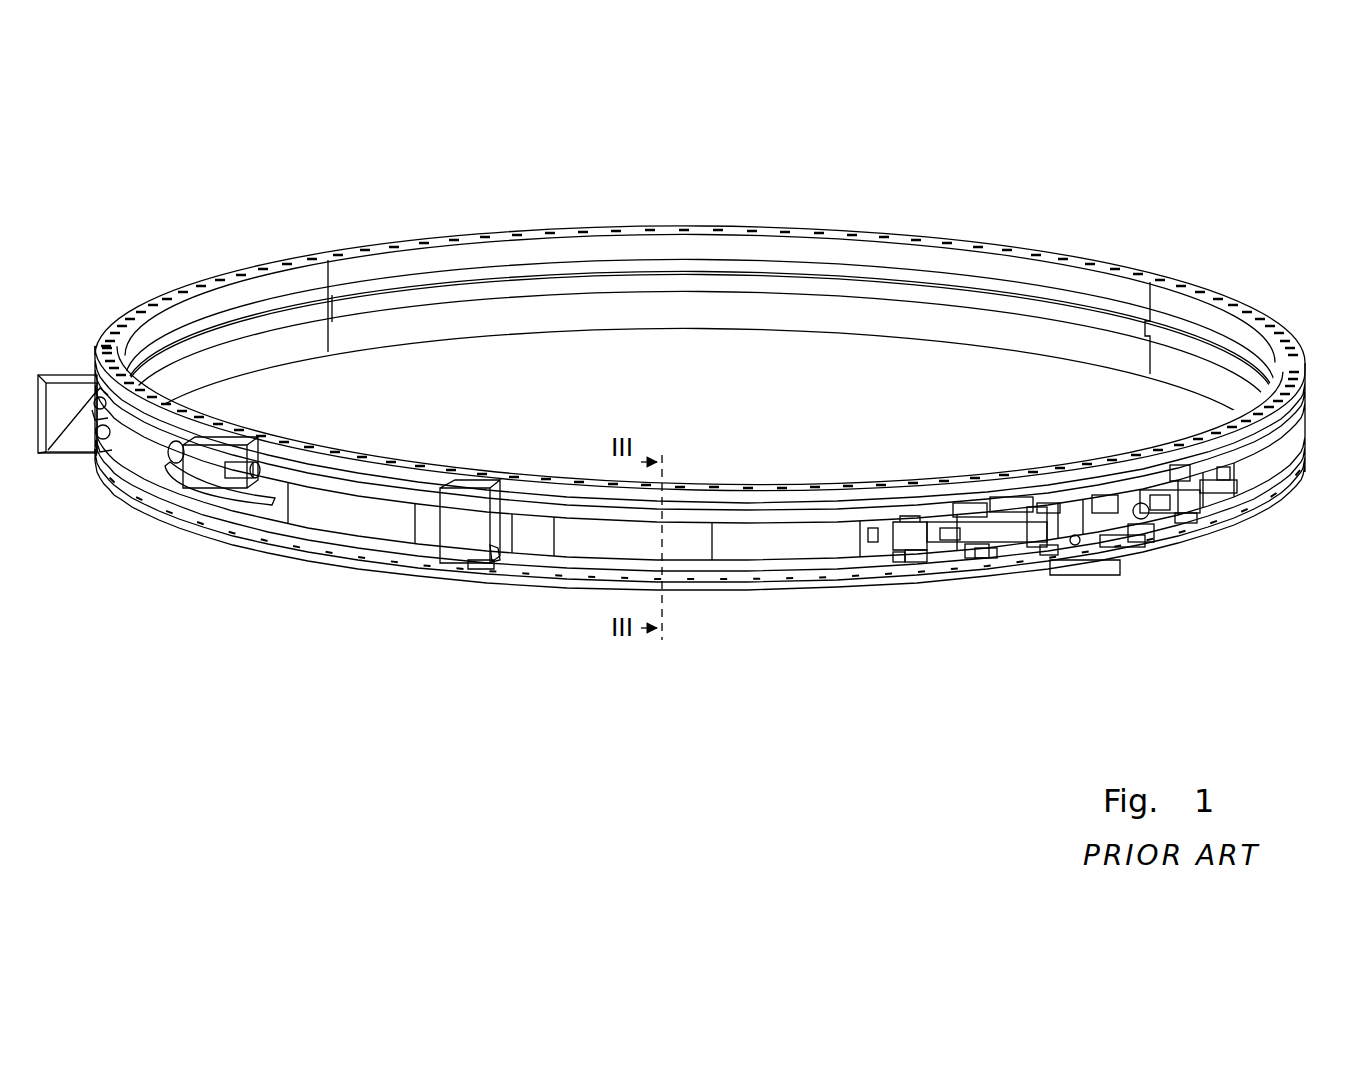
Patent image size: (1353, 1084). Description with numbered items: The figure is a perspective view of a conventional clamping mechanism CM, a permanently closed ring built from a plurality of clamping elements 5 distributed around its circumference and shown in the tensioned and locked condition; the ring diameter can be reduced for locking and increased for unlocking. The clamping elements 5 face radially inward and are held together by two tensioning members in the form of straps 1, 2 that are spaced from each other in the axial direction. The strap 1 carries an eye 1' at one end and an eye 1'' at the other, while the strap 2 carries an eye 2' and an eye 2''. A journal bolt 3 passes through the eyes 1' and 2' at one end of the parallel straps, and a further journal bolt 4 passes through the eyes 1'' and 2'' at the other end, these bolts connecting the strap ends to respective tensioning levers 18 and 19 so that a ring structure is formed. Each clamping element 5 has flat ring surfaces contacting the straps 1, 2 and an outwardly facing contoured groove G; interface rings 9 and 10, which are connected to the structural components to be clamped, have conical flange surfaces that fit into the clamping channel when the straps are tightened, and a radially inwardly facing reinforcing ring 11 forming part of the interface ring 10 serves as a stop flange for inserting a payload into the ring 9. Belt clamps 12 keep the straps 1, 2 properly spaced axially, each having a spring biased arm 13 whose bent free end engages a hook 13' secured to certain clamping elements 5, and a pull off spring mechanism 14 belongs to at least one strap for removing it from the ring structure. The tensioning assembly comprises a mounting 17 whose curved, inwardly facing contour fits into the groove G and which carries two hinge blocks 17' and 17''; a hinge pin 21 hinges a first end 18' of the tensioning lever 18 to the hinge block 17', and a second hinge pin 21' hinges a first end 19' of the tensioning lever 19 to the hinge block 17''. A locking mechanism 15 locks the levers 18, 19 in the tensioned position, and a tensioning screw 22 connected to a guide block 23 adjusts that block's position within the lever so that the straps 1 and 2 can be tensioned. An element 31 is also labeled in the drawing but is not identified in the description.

The strap 1 is at (950, 476).
The eye 1' is at (1002, 466).
The eye 1'' is at (1182, 436).
The strap 2 is at (929, 598).
The eye 2' is at (980, 584).
The eye 2'' is at (1166, 566).
The journal bolt 3 is at (960, 516).
The journal bolt 4 is at (1160, 498).
The clamping element 5 is at (335, 518).
The interface ring 9 is at (371, 268).
The interface ring 10 is at (487, 318).
The reinforcing ring 11 is at (567, 283).
The belt clamp 12 is at (64, 370).
The spring biased arm 13 is at (302, 502).
The hook 13' is at (105, 476).
The pull off spring mechanism 14 is at (193, 490).
The locking mechanism 15 is at (1105, 580).
The mounting 17 is at (1031, 473).
The hinge block 17' is at (851, 580).
The hinge block 17'' is at (1245, 470).
The tensioning lever 18 is at (1050, 596).
The first end of tensioning lever 18' is at (874, 491).
The tensioning lever 19 is at (1168, 586).
The first end of tensioning lever 19' is at (1277, 497).
The hinge pin 21 is at (883, 592).
The hinge pin 21' is at (1219, 521).
The tensioning screw 22 is at (1136, 520).
The guide block 23 is at (1190, 520).
The bracket 31 is at (1102, 498).
The clamping mechanism CM is at (968, 217).
The contoured groove G is at (784, 553).